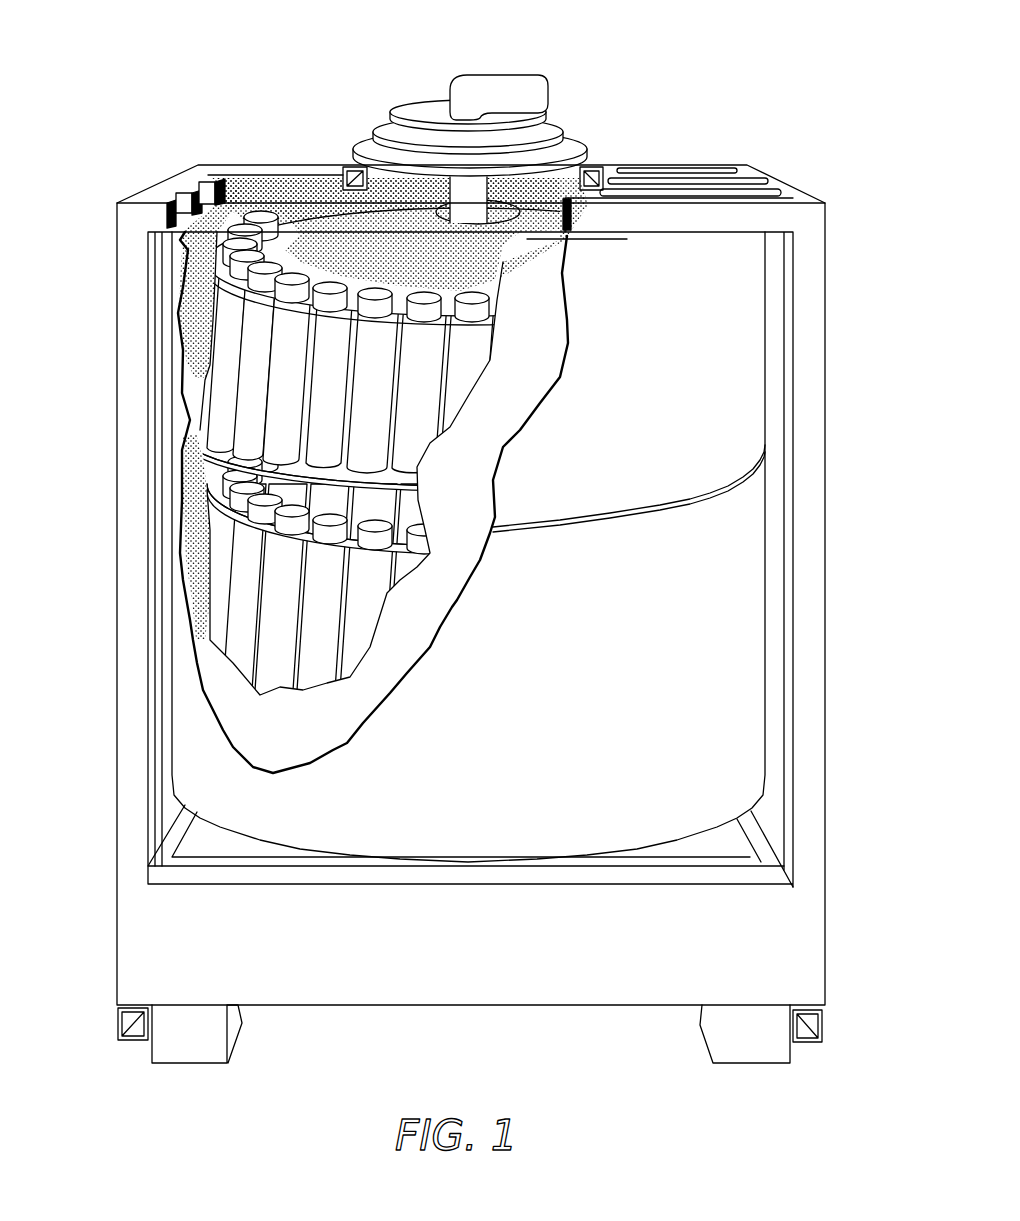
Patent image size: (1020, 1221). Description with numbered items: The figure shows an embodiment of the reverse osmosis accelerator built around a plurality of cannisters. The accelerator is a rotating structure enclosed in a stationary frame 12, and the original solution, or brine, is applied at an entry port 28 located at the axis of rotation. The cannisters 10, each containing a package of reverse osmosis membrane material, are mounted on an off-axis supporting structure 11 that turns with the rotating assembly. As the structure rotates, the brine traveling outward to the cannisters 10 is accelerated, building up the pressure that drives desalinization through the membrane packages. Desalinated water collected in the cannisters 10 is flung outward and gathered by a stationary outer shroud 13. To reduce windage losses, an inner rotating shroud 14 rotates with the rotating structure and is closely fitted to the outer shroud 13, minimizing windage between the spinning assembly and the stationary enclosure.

The cannister 10 is at (250, 359).
The off-axis supporting structure 11 is at (200, 277).
The stationary frame 12 is at (132, 467).
The stationary outer shroud 13 is at (633, 272).
The inner rotating shroud 14 is at (528, 258).
The entry port 28 is at (528, 82).